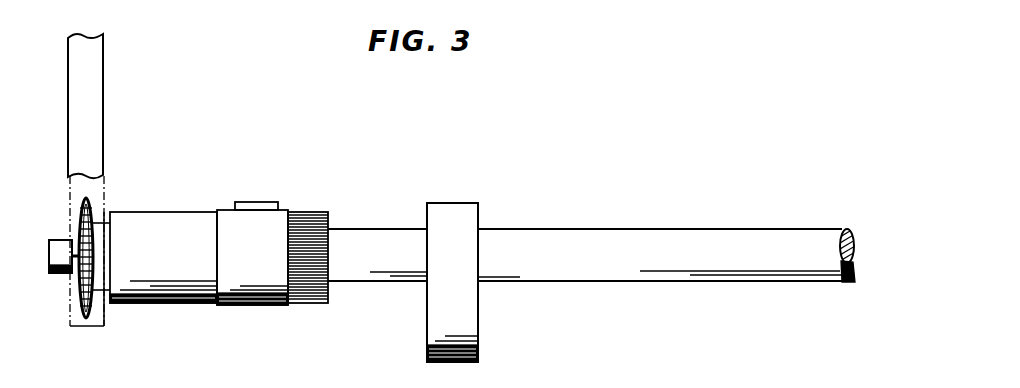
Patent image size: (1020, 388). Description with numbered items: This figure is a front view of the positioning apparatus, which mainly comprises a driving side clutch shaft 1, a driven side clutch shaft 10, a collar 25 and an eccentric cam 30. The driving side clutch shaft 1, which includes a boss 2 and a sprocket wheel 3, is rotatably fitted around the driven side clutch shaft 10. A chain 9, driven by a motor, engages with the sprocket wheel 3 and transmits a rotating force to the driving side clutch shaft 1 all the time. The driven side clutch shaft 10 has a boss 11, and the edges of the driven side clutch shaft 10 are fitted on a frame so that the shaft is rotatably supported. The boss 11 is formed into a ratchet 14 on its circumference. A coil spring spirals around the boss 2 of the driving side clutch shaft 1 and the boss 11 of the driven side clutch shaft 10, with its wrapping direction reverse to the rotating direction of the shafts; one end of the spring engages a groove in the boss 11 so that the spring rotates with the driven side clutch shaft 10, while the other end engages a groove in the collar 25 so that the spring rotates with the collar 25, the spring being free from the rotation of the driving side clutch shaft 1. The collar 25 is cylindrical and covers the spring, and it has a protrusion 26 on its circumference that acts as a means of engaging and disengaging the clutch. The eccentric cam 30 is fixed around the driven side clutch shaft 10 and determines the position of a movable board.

The driving side clutch shaft 1 is at (152, 206).
The boss 2 is at (152, 303).
The sprocket wheel 3 is at (87, 318).
The chain 9 is at (103, 82).
The driven side clutch shaft 10 is at (592, 220).
The boss 11 is at (328, 222).
The ratchet 14 is at (308, 212).
The collar 25 is at (250, 305).
The protrusion 26 is at (255, 202).
The eccentric cam 30 is at (478, 317).